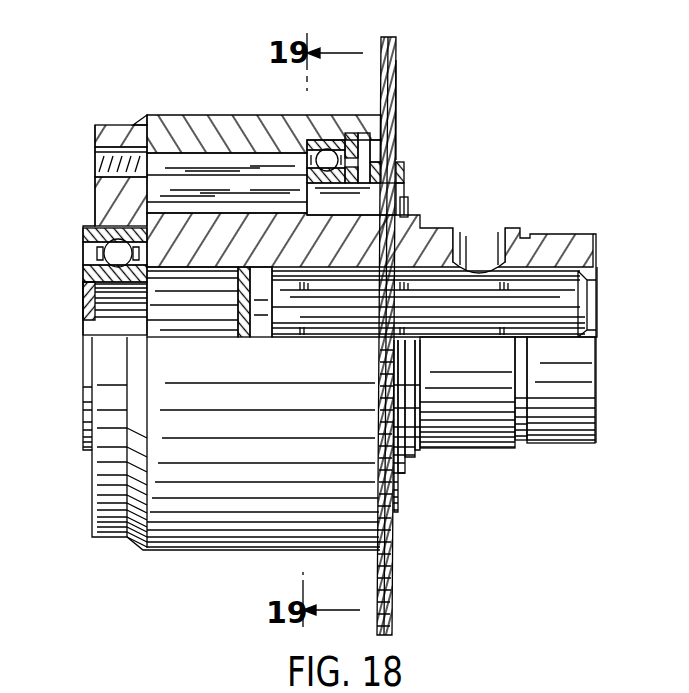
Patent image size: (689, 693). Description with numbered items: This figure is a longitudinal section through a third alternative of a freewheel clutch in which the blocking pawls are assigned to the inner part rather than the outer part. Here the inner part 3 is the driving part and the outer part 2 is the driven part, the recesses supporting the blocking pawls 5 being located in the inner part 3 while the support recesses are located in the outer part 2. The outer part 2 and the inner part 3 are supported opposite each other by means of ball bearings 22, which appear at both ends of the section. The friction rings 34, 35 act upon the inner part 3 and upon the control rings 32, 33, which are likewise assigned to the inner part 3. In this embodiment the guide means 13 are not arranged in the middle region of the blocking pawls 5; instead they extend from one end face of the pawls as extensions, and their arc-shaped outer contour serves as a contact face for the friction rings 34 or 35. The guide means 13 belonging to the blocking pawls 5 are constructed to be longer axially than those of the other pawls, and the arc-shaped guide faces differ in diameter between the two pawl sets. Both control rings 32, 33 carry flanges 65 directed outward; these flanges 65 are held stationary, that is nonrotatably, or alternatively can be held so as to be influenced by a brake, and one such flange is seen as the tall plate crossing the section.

The outer part 2 is at (252, 128).
The inner part 3 is at (563, 247).
The blocking pawl 5 is at (199, 187).
The guide means 13 is at (378, 202).
The ball bearings 22 is at (328, 147).
The control ring 32 is at (380, 161).
The control ring 33 is at (366, 151).
The friction ring 34 is at (405, 176).
The friction ring 35 is at (397, 95).
The flanges 65 is at (395, 63).